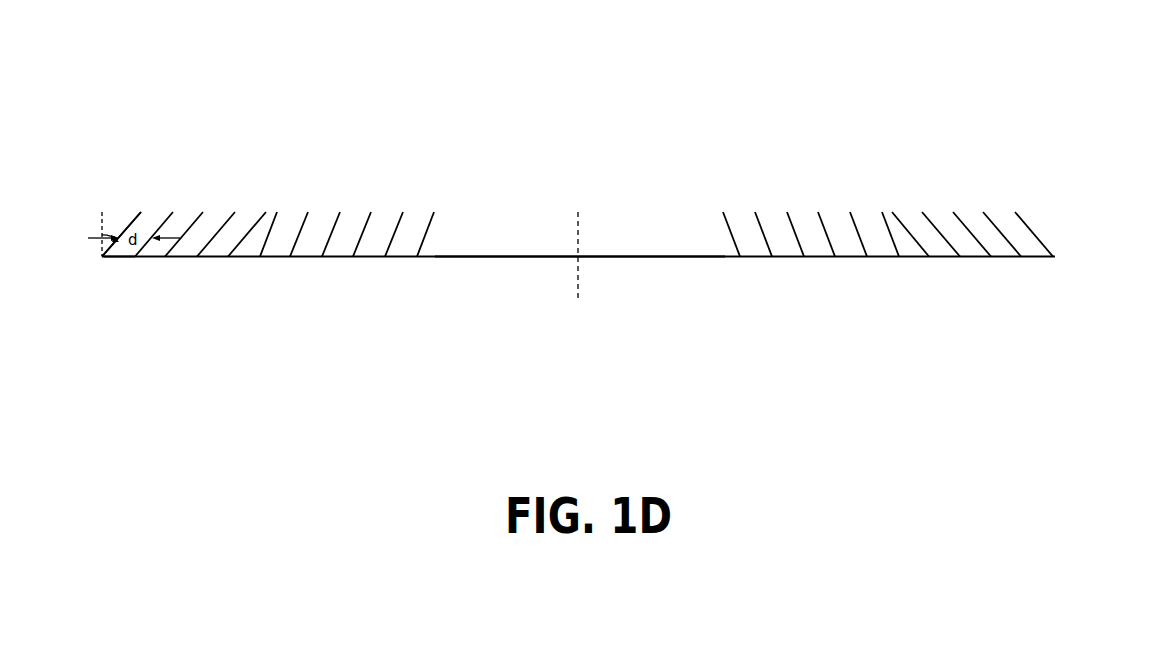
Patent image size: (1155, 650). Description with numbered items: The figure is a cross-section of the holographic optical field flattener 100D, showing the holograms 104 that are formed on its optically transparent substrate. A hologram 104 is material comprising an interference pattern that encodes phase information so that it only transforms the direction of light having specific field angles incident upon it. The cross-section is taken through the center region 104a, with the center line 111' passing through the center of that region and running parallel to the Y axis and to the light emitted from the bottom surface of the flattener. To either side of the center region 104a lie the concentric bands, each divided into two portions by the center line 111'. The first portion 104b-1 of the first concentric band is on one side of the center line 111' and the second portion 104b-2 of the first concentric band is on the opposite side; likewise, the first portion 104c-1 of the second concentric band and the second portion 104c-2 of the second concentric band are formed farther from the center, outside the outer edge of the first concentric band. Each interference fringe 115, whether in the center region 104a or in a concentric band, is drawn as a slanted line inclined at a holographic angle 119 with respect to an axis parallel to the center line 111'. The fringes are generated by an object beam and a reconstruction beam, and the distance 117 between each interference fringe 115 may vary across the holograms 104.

The holographic optical field flattener 100D is at (613, 53).
The holograms 104 is at (1072, 210).
The center region 104a is at (435, 327).
The first portion of the first concentric band 104b-1 is at (893, 327).
The second portion of the first concentric band 104b-2 is at (262, 327).
The first portion of the second concentric band 104c-1 is at (1057, 327).
The second portion of the second concentric band 104c-2 is at (100, 327).
The center line 111' is at (609, 270).
The interference fringe 115 is at (134, 212).
The distance between interference fringes 117 is at (128, 258).
The holographic angle 119 is at (116, 233).